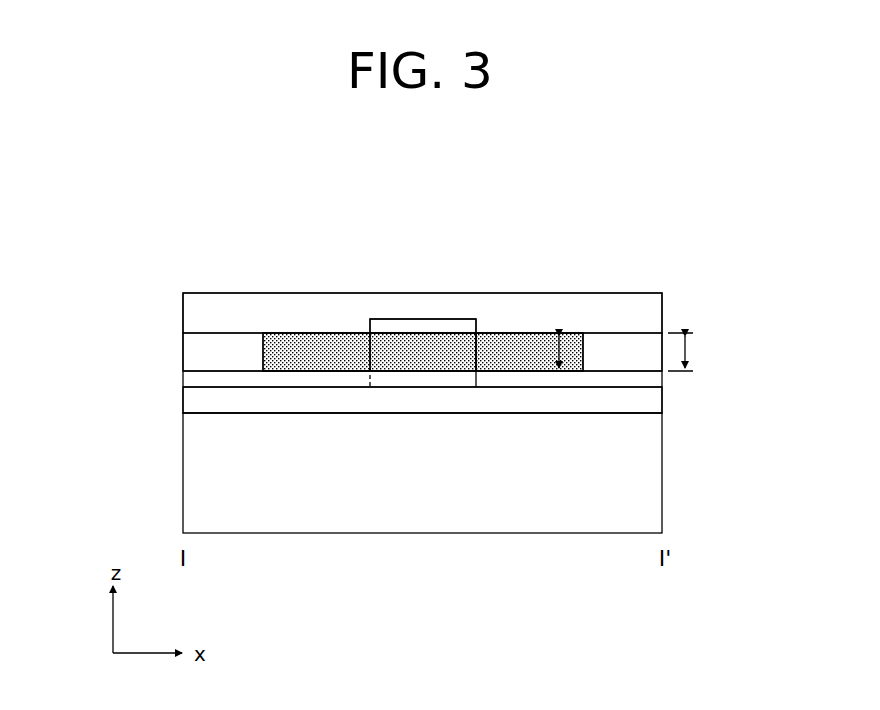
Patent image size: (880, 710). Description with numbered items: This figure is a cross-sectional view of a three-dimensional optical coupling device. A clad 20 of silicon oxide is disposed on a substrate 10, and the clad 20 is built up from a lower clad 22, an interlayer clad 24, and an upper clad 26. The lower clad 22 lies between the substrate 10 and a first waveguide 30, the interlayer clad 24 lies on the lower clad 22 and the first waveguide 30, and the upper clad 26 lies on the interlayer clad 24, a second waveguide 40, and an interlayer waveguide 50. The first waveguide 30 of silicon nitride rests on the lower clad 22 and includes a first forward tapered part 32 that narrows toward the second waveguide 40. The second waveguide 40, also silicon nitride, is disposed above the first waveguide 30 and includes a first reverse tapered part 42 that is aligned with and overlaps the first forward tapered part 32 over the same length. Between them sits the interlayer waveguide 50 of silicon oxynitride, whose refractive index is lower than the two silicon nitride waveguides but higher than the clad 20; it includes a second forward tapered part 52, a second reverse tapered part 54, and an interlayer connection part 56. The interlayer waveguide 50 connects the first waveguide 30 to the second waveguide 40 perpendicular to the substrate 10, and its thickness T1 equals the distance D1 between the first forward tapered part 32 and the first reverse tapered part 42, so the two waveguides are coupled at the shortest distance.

The substrate 10 is at (195, 477).
The clad 20 is at (110, 303).
The lower clad 22 is at (195, 401).
The interlayer clad 24 is at (195, 352).
The upper clad 26 is at (195, 313).
The first waveguide 30 is at (327, 378).
The first forward tapered part 32 is at (427, 376).
The second waveguide 40 is at (510, 325).
The first reverse tapered part 42 is at (455, 325).
The interlayer waveguide 50 is at (312, 219).
The second forward tapered part 52 is at (493, 353).
The second reverse tapered part 54 is at (336, 350).
The interlayer connection part 56 is at (394, 350).
The distance D1 is at (558, 351).
The thickness T1 is at (693, 352).